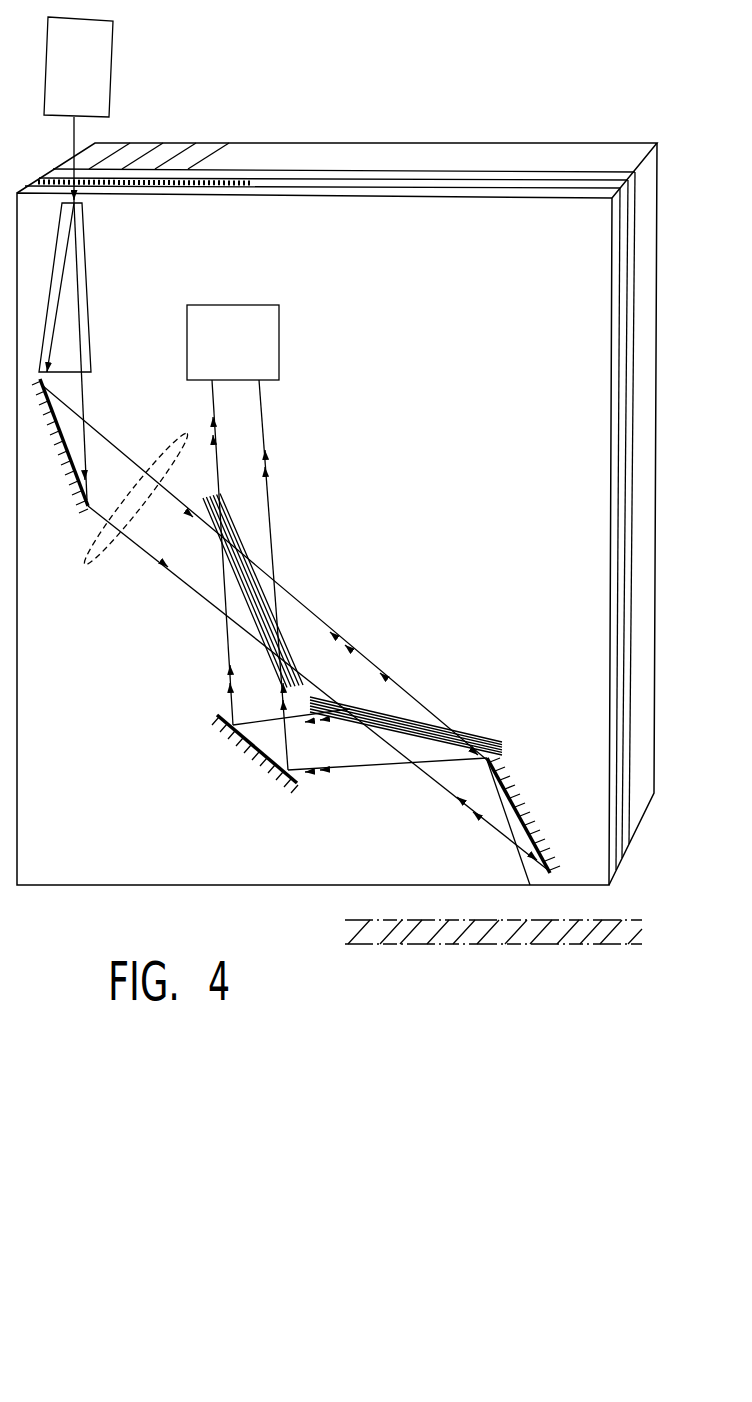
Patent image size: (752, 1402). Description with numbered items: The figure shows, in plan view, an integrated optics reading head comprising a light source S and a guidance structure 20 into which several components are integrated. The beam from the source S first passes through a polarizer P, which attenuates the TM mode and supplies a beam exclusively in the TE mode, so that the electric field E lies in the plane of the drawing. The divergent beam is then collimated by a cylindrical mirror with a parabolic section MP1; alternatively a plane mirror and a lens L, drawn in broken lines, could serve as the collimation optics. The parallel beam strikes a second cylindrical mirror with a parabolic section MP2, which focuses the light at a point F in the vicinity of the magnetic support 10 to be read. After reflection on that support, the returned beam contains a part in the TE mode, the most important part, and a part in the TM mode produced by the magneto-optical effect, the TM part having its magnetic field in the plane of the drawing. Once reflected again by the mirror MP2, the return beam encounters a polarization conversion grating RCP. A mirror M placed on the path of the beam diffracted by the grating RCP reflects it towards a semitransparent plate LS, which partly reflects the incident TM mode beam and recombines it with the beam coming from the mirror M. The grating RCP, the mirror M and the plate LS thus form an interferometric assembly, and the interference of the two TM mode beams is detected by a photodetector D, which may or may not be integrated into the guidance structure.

The light source S is at (103, 52).
The guidance structure 20 is at (450, 136).
The polarizer P is at (68, 295).
The photodetector D is at (232, 318).
The cylindrical mirror with a parabolic section MP1 is at (57, 466).
The electric field E is at (82, 392).
The TE mode TE is at (512, 822).
The TM mode TM is at (298, 395).
The lens L is at (98, 560).
The semitransparent plate LS is at (250, 592).
The mirror M is at (248, 748).
The polarization conversion grating RCP is at (477, 738).
The cylindrical mirror with a parabolic section MP2 is at (532, 812).
The focal point F is at (530, 885).
The magnetic support 10 is at (420, 937).